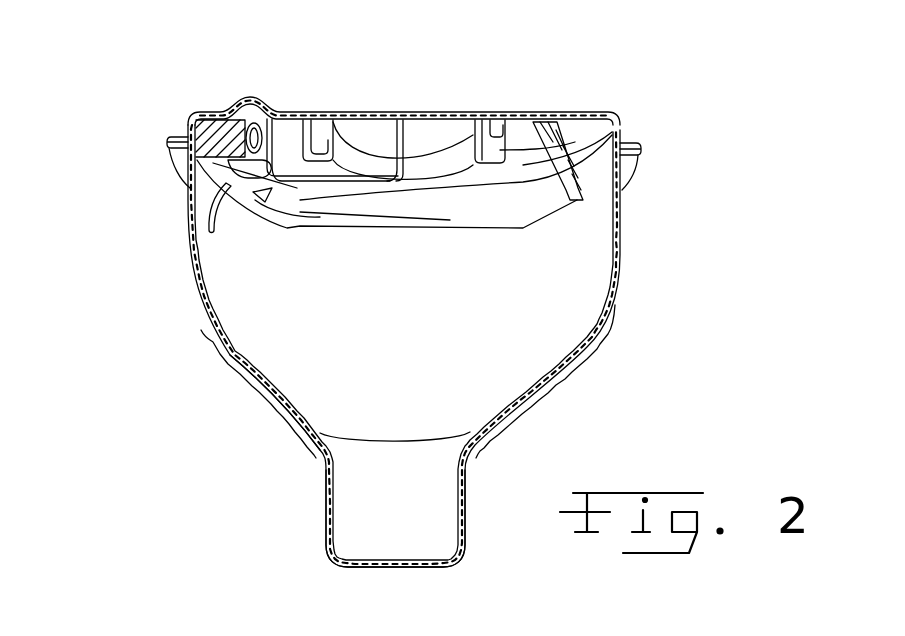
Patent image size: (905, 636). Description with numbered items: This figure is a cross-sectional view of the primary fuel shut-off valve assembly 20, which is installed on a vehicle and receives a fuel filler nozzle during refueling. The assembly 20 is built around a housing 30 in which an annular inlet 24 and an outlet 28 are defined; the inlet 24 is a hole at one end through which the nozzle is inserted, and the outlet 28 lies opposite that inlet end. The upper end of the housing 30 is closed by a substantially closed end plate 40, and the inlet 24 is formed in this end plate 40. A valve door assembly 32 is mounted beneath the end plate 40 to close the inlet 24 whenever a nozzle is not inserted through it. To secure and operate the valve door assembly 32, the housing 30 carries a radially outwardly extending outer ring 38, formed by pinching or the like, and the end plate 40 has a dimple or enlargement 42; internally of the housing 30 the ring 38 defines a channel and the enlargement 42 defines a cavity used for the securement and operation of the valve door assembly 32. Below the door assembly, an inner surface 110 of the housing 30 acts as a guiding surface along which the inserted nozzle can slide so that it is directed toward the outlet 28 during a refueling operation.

The primary fuel shut-off valve assembly 20 is at (182, 73).
The annular inlet 24 is at (483, 135).
The outlet 28 is at (372, 545).
The housing 30 is at (376, 316).
The valve door assembly 32 is at (404, 189).
The outer ring 38 is at (170, 142).
The end plate 40 is at (584, 118).
The enlargement 42 is at (249, 98).
The inner surface 110 is at (283, 405).